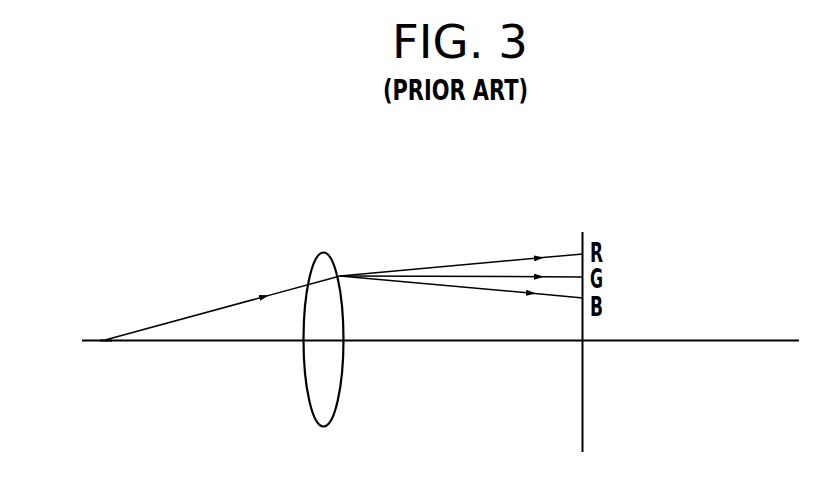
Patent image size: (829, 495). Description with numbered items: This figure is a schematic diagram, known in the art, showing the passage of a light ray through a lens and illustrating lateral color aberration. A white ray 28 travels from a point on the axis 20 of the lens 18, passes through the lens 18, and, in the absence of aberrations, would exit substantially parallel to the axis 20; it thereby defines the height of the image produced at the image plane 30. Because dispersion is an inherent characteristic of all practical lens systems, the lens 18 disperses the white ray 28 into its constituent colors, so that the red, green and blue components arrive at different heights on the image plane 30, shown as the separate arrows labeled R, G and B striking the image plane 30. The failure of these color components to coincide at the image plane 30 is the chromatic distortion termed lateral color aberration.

The lens 18 is at (327, 402).
The axis 20 is at (120, 343).
The white ray 28 is at (233, 304).
The image plane 30 is at (582, 395).